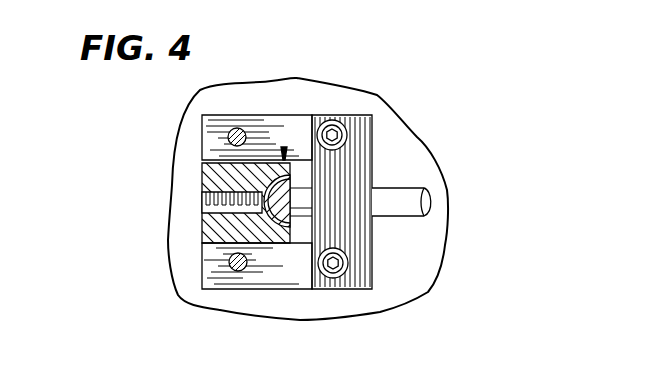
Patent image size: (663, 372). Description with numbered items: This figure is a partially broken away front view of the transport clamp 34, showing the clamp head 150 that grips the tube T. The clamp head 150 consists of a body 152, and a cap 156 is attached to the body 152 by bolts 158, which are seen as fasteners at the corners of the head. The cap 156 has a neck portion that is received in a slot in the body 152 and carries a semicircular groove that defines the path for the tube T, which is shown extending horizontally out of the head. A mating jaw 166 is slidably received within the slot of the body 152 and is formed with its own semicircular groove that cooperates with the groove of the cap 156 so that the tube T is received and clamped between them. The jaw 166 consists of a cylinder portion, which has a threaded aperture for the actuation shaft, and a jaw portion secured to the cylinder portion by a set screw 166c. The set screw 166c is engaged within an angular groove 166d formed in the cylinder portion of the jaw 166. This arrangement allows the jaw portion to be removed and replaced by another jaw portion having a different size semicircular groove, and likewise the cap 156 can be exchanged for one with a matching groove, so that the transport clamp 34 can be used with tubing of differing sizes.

The transport clamp 34 is at (450, 60).
The clamp head 150 is at (367, 161).
The body 152 is at (233, 115).
The cap 156 is at (210, 225).
The bolts 158 is at (228, 138).
The mating jaw 166 is at (284, 147).
The set screw 166c is at (205, 200).
The angular groove 166d is at (280, 228).
The tube T is at (407, 190).